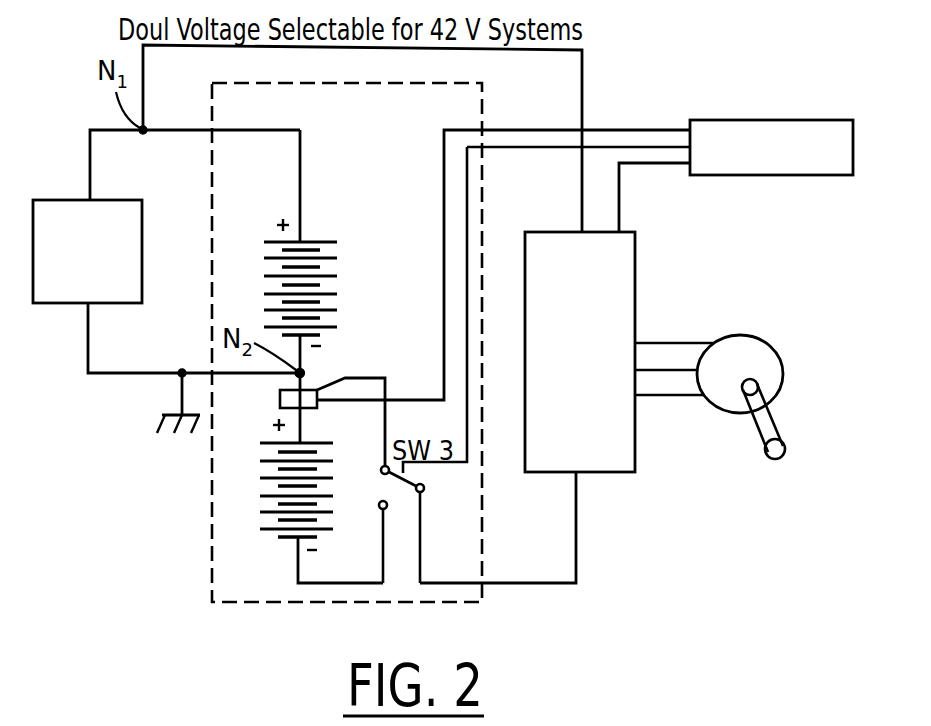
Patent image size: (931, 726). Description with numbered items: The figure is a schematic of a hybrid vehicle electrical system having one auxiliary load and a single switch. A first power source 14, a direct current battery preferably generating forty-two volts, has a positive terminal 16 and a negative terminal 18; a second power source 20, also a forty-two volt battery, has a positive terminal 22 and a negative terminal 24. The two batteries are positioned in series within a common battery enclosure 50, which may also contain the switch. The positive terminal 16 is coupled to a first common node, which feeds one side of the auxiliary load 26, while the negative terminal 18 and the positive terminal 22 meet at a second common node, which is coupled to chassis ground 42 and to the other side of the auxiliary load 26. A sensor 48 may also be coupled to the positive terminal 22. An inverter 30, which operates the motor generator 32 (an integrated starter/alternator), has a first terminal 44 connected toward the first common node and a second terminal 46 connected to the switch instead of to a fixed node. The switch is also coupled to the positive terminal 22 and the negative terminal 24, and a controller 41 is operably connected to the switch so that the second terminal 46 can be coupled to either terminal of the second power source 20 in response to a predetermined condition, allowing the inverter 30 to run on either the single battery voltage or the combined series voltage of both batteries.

The first power source 14 is at (332, 285).
The positive terminal 16 is at (308, 191).
The negative terminal 18 is at (302, 372).
The second power source 20 is at (262, 484).
The positive terminal 22 is at (300, 426).
The negative terminal 24 is at (292, 557).
The auxiliary load 26 is at (47, 200).
The inverter 30 is at (640, 246).
The motor generator 32 is at (787, 373).
The controller 41 is at (763, 119).
The chassis ground 42 is at (140, 401).
The first terminal 44 is at (580, 186).
The second terminal 46 is at (578, 513).
The sensor 48 is at (352, 381).
The battery enclosure 50 is at (485, 97).